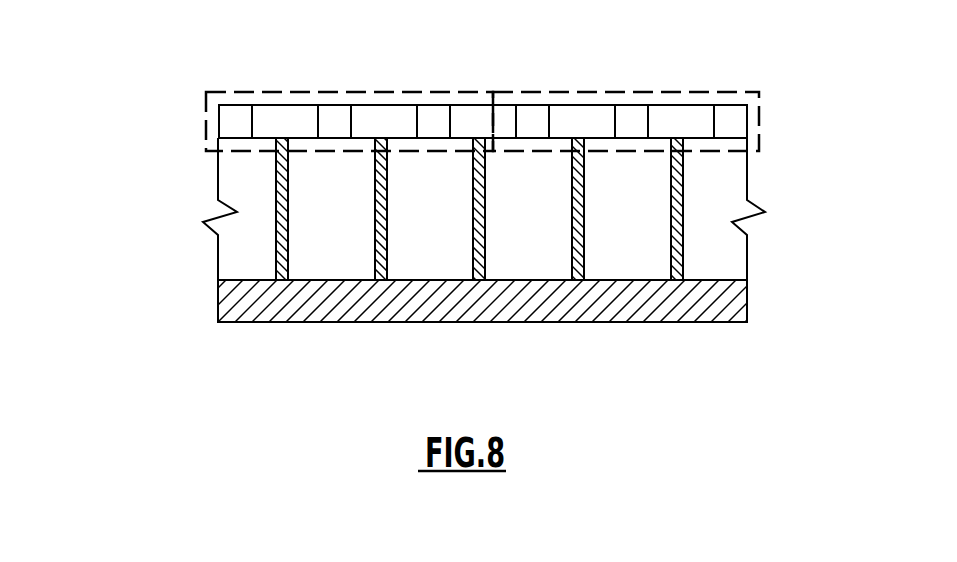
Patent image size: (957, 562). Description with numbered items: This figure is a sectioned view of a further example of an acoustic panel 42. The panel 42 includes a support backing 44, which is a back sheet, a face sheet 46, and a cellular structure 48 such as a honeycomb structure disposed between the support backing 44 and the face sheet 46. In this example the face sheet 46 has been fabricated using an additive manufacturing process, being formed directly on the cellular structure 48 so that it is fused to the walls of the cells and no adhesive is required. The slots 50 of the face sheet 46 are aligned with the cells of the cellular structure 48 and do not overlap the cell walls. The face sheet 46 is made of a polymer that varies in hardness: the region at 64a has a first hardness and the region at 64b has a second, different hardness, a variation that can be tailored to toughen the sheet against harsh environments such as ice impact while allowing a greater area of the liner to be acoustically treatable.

The panel 42 is at (445, 211).
The support backing 44 is at (416, 312).
The face sheet 46 is at (483, 89).
The cellular structure 48 is at (222, 247).
The slots 50 is at (434, 117).
The region of first hardness 64a is at (762, 126).
The region of second hardness 64b is at (205, 150).